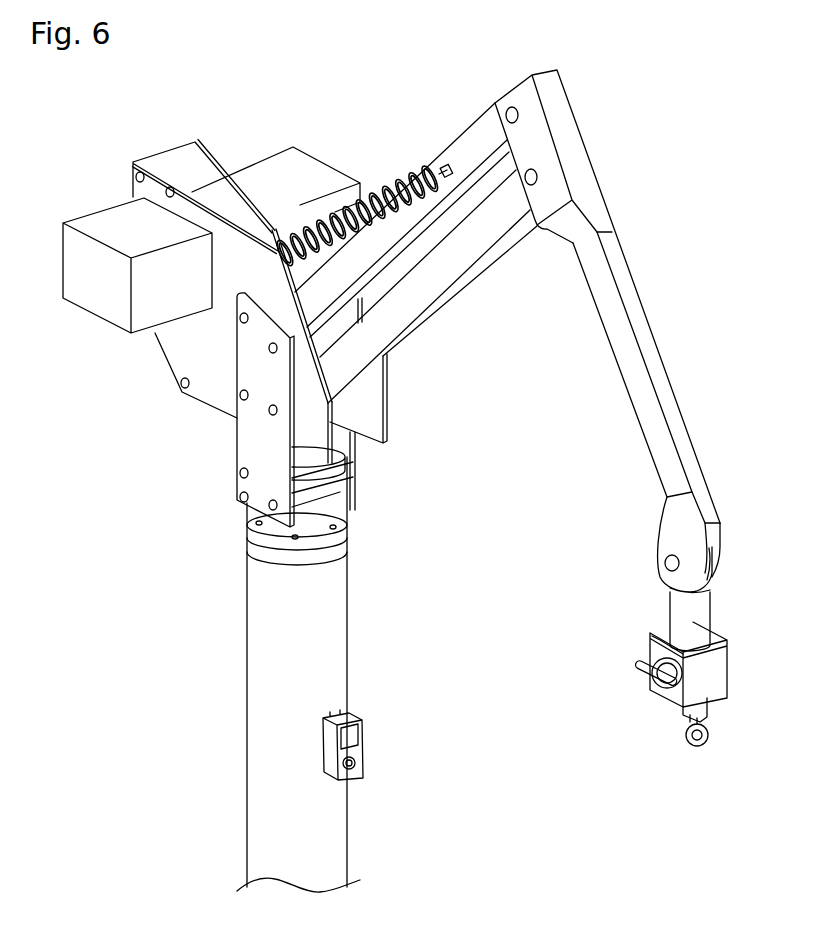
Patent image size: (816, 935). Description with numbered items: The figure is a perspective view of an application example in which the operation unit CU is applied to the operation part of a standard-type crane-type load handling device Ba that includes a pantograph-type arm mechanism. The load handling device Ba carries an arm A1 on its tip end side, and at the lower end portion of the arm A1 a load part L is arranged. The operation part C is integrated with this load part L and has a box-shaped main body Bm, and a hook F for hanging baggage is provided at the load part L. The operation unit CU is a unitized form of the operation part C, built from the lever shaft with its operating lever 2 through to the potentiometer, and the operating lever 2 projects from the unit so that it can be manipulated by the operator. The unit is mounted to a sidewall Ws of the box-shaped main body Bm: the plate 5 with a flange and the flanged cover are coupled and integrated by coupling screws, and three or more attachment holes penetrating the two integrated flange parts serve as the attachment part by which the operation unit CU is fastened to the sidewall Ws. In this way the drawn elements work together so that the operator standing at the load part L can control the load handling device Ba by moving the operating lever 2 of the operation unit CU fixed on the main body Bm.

The crane-type load handling device Ba is at (428, 337).
The arm A1 is at (652, 360).
The operation part C is at (730, 635).
The box-shaped main body Bm is at (718, 675).
The plate with a flange 5 is at (652, 652).
The operation unit CU is at (623, 665).
The operating lever 2 is at (643, 670).
The sidewall Ws is at (642, 708).
The load part L is at (660, 742).
The hook F is at (695, 752).